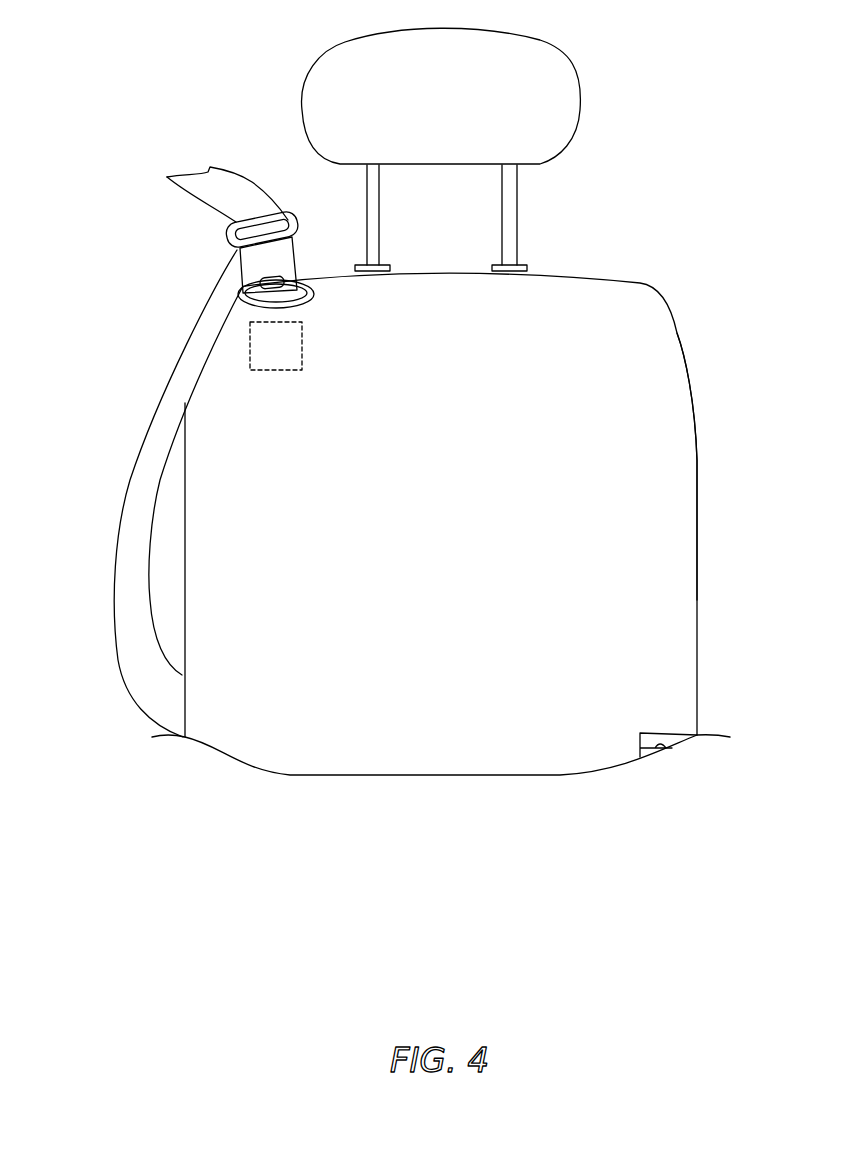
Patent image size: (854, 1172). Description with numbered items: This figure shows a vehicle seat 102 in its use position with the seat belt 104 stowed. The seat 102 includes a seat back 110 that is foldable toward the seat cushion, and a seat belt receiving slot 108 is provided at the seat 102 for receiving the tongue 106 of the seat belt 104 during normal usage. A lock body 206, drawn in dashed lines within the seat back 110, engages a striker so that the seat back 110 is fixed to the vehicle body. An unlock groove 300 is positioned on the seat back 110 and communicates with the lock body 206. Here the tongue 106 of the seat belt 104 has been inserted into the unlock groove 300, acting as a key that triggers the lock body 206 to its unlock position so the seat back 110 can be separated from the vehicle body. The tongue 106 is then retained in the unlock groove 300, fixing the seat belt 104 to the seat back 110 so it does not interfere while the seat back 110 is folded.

The seat 102 is at (686, 257).
The seat belt 104 is at (133, 525).
The tongue 106 is at (228, 238).
The seat belt receiving slot 108 is at (668, 745).
The seat back 110 is at (693, 387).
The lock body 206 is at (309, 359).
The unlock groove 300 is at (313, 288).